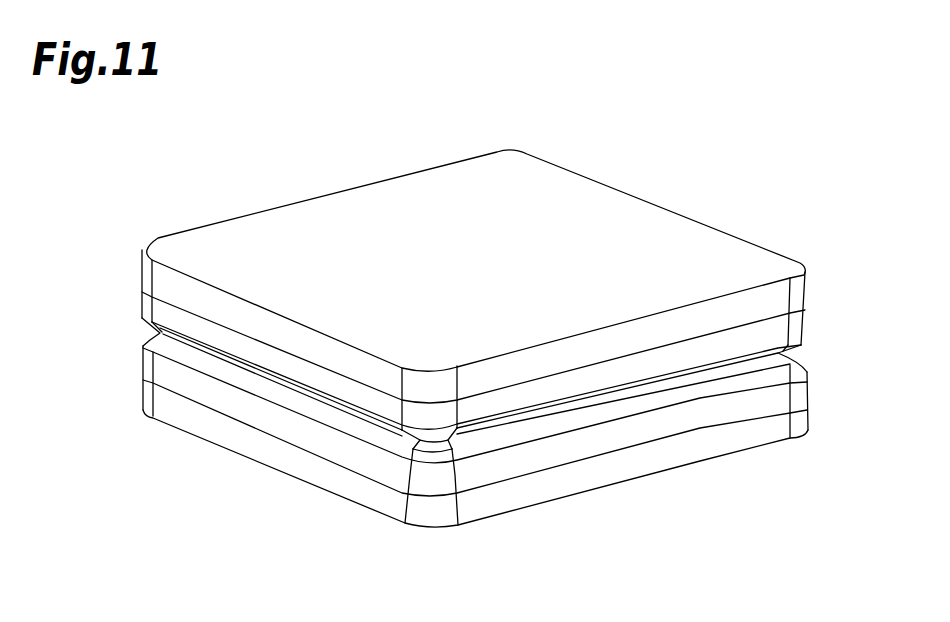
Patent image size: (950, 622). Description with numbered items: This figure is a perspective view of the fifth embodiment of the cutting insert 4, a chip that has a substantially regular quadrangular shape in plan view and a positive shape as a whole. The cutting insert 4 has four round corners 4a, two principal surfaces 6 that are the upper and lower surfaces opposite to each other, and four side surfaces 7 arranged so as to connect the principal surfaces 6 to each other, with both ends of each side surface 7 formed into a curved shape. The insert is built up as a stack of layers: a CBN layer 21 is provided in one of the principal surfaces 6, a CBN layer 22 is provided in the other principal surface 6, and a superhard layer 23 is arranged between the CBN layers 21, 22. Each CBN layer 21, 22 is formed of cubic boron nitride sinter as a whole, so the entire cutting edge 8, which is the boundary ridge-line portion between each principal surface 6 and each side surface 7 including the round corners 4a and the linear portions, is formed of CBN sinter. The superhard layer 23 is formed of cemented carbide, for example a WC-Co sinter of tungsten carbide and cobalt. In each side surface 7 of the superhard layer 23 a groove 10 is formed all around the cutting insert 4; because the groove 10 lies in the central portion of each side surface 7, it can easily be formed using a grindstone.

The cutting insert 4 is at (313, 111).
The round corner 4a is at (145, 283).
The principal surface 6 is at (597, 222).
The side surface 7 is at (475, 426).
The cutting edge 8 is at (530, 350).
The groove 10 is at (742, 373).
The CBN layer 21 is at (687, 328).
The CBN layer 22 is at (713, 448).
The superhard layer 23 is at (577, 450).